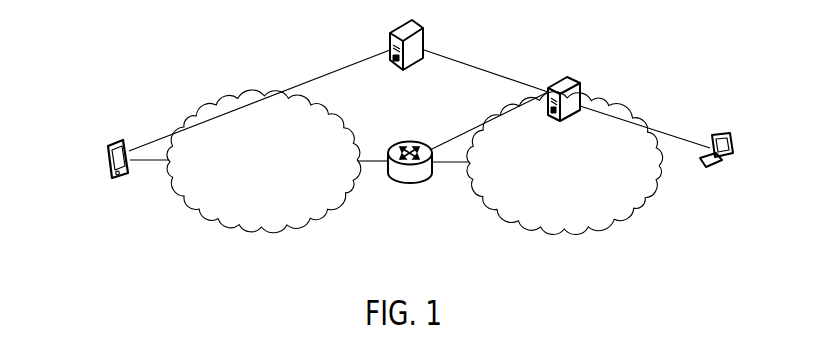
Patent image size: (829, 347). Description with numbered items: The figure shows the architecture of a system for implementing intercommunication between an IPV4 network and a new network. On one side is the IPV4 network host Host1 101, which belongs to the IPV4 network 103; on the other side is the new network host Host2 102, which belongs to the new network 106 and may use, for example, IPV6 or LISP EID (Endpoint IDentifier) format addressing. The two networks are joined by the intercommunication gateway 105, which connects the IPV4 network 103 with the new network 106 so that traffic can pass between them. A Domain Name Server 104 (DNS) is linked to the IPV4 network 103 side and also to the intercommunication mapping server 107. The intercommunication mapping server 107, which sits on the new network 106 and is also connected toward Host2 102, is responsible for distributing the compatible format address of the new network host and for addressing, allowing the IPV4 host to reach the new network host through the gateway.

The IPV4 network host Host1 101 is at (85, 165).
The new network host Host2 102 is at (724, 142).
The IPV4 network 103 is at (264, 147).
The Domain Name Server 104 is at (388, 26).
The intercommunication gateway 105 is at (400, 204).
The new network 106 is at (565, 176).
The intercommunication mapping server 107 is at (641, 79).